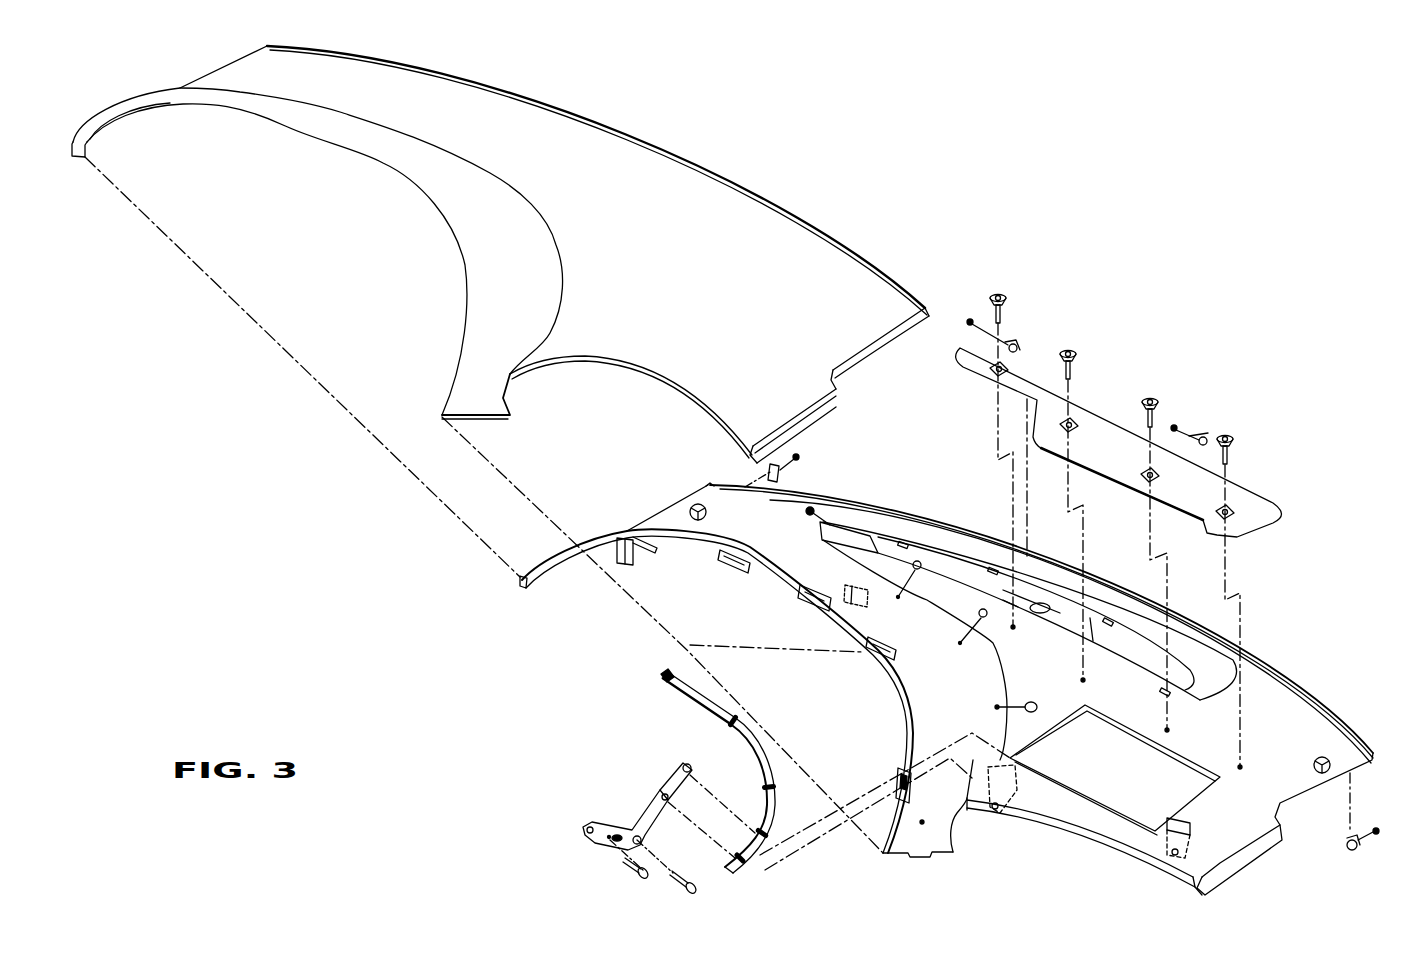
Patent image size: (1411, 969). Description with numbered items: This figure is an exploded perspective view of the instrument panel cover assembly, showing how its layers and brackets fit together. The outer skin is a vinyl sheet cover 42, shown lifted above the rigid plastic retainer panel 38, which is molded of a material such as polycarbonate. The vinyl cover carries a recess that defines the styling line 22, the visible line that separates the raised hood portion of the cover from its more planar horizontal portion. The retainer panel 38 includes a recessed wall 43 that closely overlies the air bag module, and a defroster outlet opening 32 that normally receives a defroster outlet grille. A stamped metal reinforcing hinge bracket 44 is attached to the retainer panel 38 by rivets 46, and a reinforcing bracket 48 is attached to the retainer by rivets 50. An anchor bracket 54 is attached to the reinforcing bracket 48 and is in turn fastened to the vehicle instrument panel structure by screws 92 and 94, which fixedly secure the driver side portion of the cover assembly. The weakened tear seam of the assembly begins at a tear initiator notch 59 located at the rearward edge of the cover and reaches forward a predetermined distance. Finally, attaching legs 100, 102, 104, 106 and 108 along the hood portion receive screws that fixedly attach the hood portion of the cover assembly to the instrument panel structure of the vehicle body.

The styling line 22 is at (533, 210).
The defroster outlet opening 32 is at (1210, 680).
The retainer panel 38 is at (1280, 727).
The vinyl sheet cover 42 is at (743, 230).
The recessed wall 43 is at (1160, 787).
The reinforcing hinge bracket 44 is at (1107, 427).
The rivets 46 is at (1002, 310).
The reinforcing bracket 48 is at (752, 748).
The rivets 50 is at (918, 578).
The anchor bracket 54 is at (637, 822).
The tear initiator notch 59 is at (967, 823).
The screw 92 is at (627, 867).
The screw 94 is at (673, 883).
The attaching leg 100 is at (640, 552).
The attaching leg 102 is at (733, 568).
The attaching leg 104 is at (815, 608).
The attaching leg 106 is at (880, 655).
The attaching leg 108 is at (900, 773).